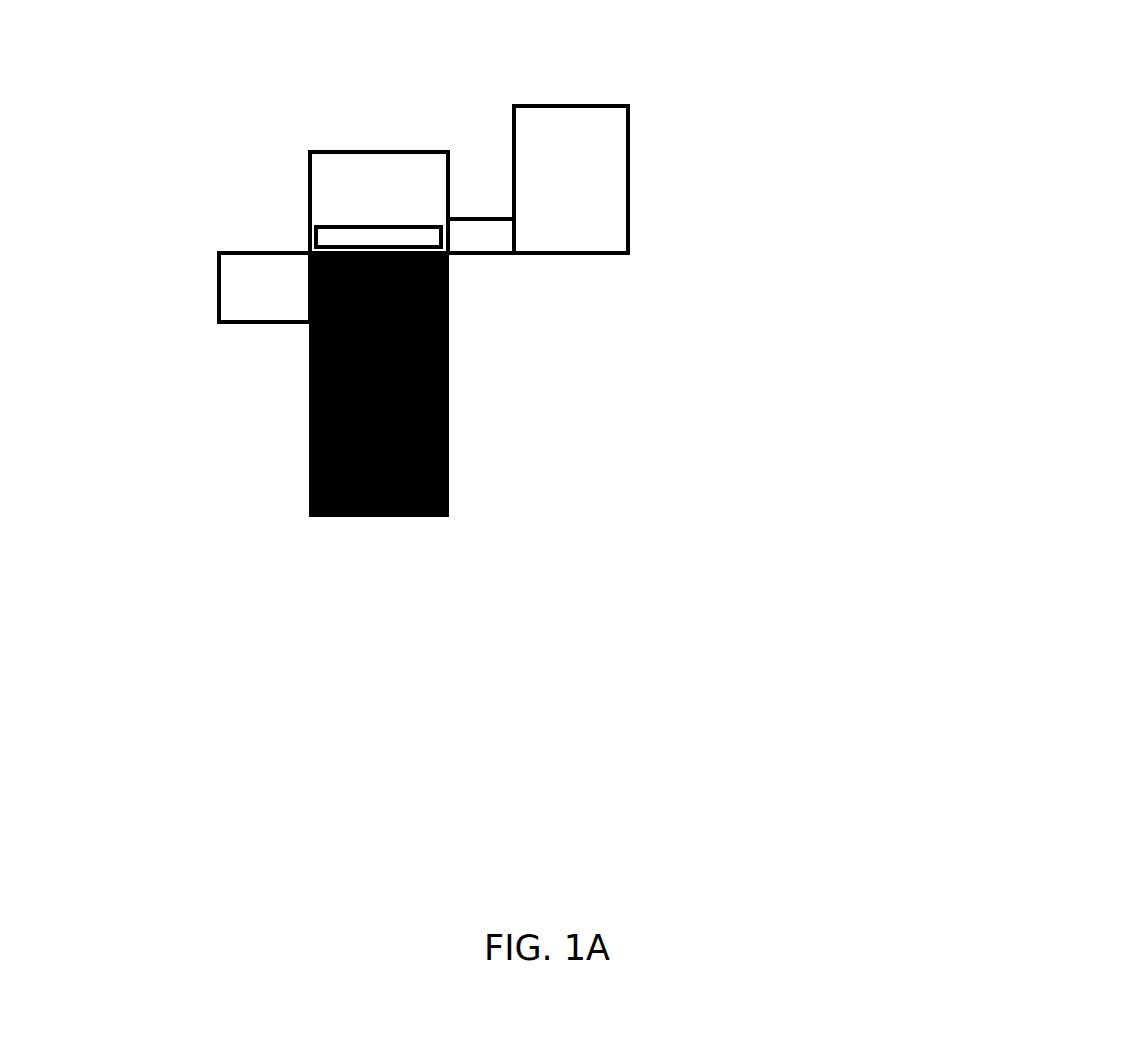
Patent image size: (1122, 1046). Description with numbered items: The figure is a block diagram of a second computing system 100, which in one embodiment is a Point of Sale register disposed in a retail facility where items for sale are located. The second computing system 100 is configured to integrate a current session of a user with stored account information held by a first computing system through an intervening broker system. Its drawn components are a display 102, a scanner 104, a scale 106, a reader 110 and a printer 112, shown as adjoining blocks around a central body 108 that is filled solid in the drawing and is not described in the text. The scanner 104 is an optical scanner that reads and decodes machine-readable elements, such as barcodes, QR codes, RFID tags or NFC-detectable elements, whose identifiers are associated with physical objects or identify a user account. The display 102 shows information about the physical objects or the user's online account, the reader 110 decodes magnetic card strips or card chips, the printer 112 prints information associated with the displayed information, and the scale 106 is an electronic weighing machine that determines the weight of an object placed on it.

The second computing system 100 is at (991, 50).
The display 102 is at (310, 202).
The scanner 104 is at (315, 237).
The scale 106 is at (218, 288).
The dark body 108 is at (379, 384).
The reader 110 is at (480, 257).
The printer 112 is at (629, 179).